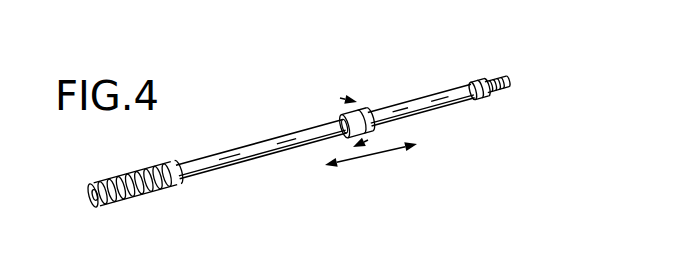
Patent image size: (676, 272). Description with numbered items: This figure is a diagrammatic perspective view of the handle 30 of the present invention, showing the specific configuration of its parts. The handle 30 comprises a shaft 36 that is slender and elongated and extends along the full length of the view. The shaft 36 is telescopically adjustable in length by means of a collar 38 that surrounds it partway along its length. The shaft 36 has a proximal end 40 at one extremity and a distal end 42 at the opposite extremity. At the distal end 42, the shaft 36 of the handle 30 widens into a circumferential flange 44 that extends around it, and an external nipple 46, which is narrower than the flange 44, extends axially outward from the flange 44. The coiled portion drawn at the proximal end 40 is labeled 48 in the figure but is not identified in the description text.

The handle 30 is at (277, 134).
The shaft 36 is at (217, 156).
The collar 38 is at (373, 104).
The proximal end 40 is at (90, 196).
The distal end 42 is at (478, 79).
The circumferential flange 44 is at (481, 102).
The nipple 46 is at (509, 83).
The coil spring 48 is at (127, 201).